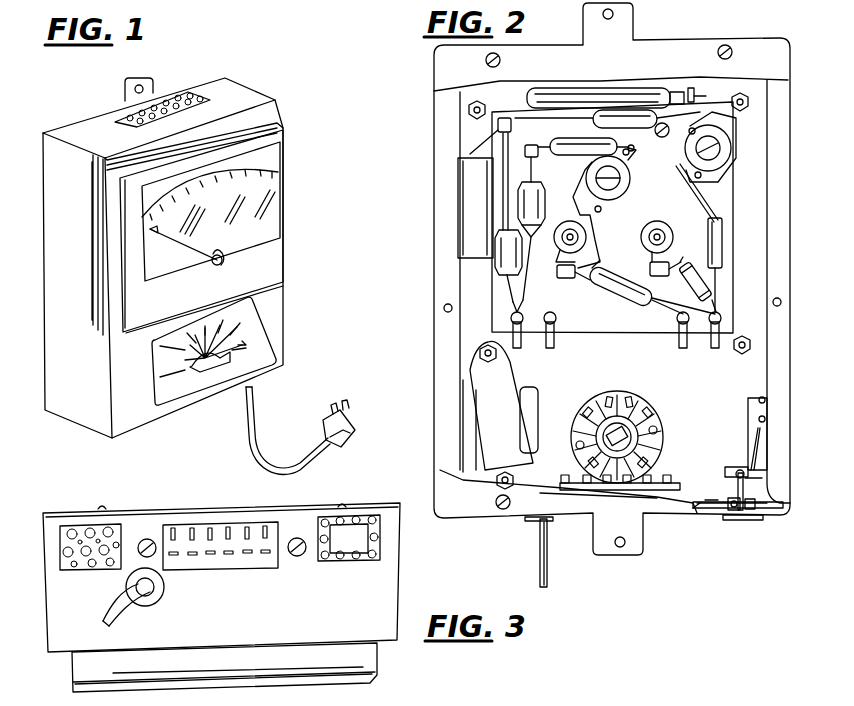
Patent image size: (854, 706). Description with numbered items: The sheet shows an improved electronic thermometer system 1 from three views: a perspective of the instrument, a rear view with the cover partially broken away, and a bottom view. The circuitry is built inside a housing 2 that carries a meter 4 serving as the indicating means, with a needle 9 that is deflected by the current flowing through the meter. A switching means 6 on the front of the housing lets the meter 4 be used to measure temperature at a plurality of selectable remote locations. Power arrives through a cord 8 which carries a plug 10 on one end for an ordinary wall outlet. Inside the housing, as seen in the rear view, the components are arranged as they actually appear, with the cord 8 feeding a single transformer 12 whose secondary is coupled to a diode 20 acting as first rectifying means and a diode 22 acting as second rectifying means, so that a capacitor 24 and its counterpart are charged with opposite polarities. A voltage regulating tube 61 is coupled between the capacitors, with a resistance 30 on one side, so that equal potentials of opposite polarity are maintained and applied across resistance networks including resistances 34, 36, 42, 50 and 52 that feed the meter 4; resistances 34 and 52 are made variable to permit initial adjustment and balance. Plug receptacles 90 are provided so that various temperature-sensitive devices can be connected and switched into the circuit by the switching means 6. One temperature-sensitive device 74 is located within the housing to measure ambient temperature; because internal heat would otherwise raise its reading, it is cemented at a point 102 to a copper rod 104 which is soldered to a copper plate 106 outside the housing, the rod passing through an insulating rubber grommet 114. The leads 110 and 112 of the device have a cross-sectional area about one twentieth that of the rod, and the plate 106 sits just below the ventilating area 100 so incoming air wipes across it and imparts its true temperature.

In FIG. 1, the electronic thermometer system 1 is at (304, 170).
In FIG. 1, the housing 2 is at (263, 100).
In FIG. 3, the housing 2 is at (393, 578).
In FIG. 2, the housing 2 is at (437, 135).
In FIG. 1, the meter 4 is at (283, 208).
In FIG. 3, the meter 4 is at (287, 687).
In FIG. 1, the switching means 6 is at (173, 395).
In FIG. 2, the switching means 6 is at (620, 393).
In FIG. 1, the cord 8 is at (243, 425).
In FIG. 3, the cord 8 is at (120, 617).
In FIG. 2, the cord 8 is at (538, 563).
In FIG. 1, the needle 9 is at (170, 240).
In FIG. 1, the plug 10 is at (350, 440).
In FIG. 2, the transformer 12 is at (510, 373).
In FIG. 2, the diode 20 is at (530, 272).
In FIG. 2, the diode 22 is at (540, 202).
In FIG. 2, the capacitor 24 is at (458, 208).
In FIG. 2, the resistance 30 is at (564, 155).
In FIG. 2, the resistance 34 is at (633, 187).
In FIG. 2, the resistance 36 is at (602, 227).
In FIG. 2, the resistance 42 is at (607, 290).
In FIG. 2, the resistance 50 is at (722, 243).
In FIG. 2, the resistance 52 is at (732, 146).
In FIG. 2, the voltage regulating tube 61 is at (598, 88).
In FIG. 2, the temperature-sensitive device 74 is at (737, 462).
In FIG. 3, the plug receptacles 90 is at (256, 534).
In FIG. 2, the plug receptacles 90 is at (661, 465).
In FIG. 3, the ventilating area 100 is at (358, 520).
In FIG. 2, the cement point 102 is at (736, 474).
In FIG. 2, the copper rod 104 is at (750, 480).
In FIG. 3, the copper plate 106 is at (358, 554).
In FIG. 2, the copper plate 106 is at (727, 519).
In FIG. 2, the temperature-sensitive device lead 110 is at (748, 412).
In FIG. 2, the temperature-sensitive device lead 112 is at (754, 452).
In FIG. 2, the rubber grommet 114 is at (737, 502).